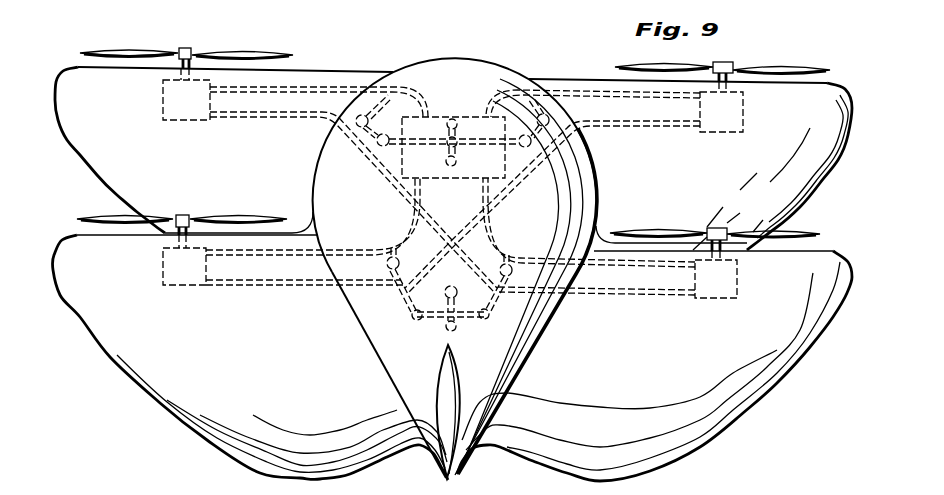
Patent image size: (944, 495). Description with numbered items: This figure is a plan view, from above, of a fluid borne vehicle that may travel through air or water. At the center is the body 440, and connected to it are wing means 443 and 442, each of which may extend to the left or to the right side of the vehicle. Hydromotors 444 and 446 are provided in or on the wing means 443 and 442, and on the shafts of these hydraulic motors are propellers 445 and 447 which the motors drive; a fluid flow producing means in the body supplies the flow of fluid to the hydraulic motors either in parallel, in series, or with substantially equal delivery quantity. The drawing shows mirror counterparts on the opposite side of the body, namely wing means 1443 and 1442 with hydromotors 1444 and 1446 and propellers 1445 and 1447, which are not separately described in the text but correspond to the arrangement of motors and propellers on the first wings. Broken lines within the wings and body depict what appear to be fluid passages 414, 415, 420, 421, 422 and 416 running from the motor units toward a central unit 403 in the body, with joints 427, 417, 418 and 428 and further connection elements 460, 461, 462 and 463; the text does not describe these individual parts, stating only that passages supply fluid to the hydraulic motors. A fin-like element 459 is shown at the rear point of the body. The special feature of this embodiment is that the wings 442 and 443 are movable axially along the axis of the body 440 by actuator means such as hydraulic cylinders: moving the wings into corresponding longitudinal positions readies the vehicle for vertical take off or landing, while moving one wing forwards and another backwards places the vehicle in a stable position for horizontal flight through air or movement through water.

The control box 403 is at (470, 127).
The upper left duct 414 is at (288, 93).
The lower left duct 415 is at (230, 118).
The right lower ducts 416 is at (620, 296).
The right upper joint 417 is at (546, 114).
The left lower joint 418 is at (386, 250).
The upper right duct 420 is at (617, 99).
The cross ducts 421 is at (670, 128).
The left lower upper duct 422 is at (293, 256).
The left upper joint 427 is at (361, 114).
The right lower joint 428 is at (514, 250).
The body 440 is at (423, 75).
The wing means 442 is at (87, 300).
The wing means 443 is at (98, 166).
The hydromotor 444 is at (163, 97).
The propeller 445 is at (107, 50).
The hydromotor 446 is at (163, 270).
The propeller 447 is at (102, 213).
The tail fin 459 is at (443, 388).
The valve 460 is at (457, 162).
The valve connection 461 is at (418, 147).
The lower valve 462 is at (445, 293).
The lower manifold 463 is at (432, 320).
The lower right wing 1442 is at (830, 250).
The upper right wing 1443 is at (812, 162).
The upper right engine box 1444 is at (743, 115).
The upper right propeller 1445 is at (780, 68).
The lower right engine box 1446 is at (737, 282).
The lower right propeller 1447 is at (747, 230).